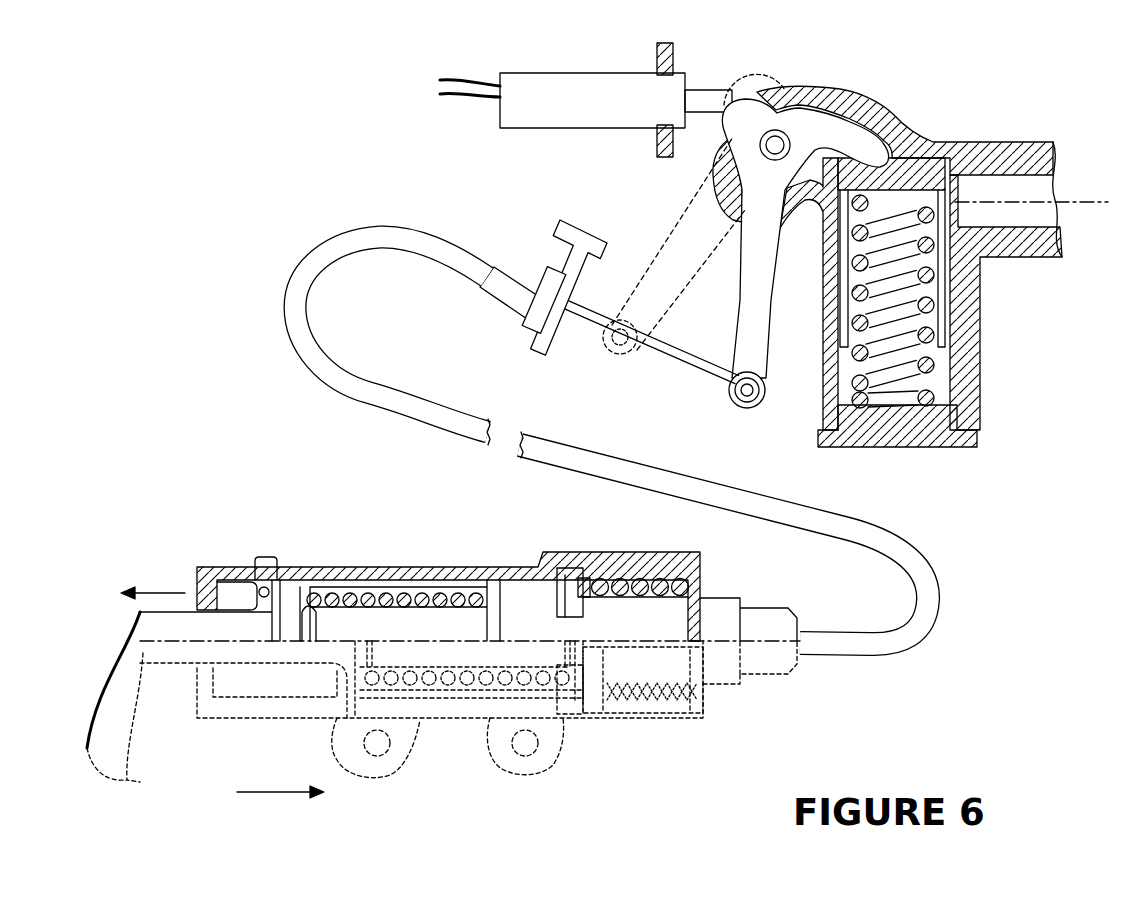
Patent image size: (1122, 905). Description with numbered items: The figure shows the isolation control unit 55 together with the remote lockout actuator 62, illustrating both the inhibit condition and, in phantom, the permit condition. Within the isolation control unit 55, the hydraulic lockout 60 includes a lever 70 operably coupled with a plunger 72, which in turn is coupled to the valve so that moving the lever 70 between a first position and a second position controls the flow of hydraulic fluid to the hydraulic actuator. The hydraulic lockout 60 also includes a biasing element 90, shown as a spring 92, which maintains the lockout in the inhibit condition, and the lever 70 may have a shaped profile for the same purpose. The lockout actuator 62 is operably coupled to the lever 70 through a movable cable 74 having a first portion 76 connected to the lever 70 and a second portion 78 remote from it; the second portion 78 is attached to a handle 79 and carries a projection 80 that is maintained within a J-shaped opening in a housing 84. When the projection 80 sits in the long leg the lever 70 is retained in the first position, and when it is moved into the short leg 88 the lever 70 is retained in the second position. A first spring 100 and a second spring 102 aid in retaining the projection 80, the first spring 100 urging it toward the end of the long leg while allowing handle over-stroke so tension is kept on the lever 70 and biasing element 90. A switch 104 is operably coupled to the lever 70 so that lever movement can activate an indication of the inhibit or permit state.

The isolation control unit 55 is at (1045, 115).
The hydraulic lockout 60 is at (908, 92).
The lockout actuator 62 is at (140, 548).
The lever 70 is at (810, 108).
The plunger 72 is at (1005, 188).
The movable cable 74 is at (373, 240).
The first portion 76 is at (680, 362).
The second portion 78 is at (842, 648).
The handle 79 is at (122, 778).
The projection 80 is at (263, 557).
The housing 84 is at (480, 566).
The short leg 88 is at (282, 567).
The biasing element 90 is at (938, 155).
The spring 92 is at (930, 407).
The first spring 100 is at (403, 590).
The second spring 102 is at (620, 580).
The switch 104 is at (573, 80).